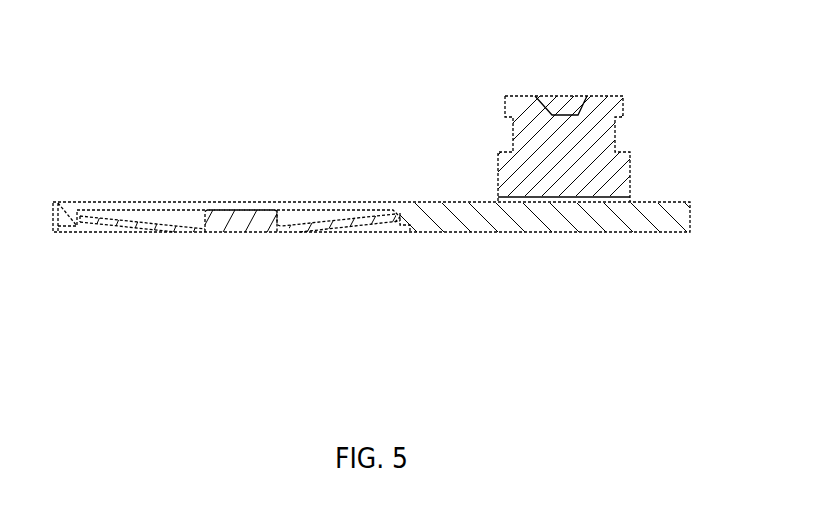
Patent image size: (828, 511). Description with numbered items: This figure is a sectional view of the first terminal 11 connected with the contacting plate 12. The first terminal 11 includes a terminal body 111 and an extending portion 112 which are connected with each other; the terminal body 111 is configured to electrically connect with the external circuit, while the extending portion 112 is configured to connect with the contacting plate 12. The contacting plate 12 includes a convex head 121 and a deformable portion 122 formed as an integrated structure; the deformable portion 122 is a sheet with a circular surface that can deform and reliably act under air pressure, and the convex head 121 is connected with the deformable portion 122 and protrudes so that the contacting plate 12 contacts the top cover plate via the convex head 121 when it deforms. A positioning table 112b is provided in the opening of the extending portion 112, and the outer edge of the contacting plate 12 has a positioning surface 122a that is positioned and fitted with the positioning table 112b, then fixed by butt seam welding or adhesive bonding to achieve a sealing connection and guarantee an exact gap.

The first terminal 11 is at (385, 217).
The terminal body 111 is at (530, 97).
The extending portion 112 is at (58, 207).
The positioning table 112b is at (150, 212).
The contacting plate 12 is at (180, 264).
The convex head 121 is at (216, 226).
The deformable portion 122 is at (142, 231).
The positioning surface 122a is at (88, 207).